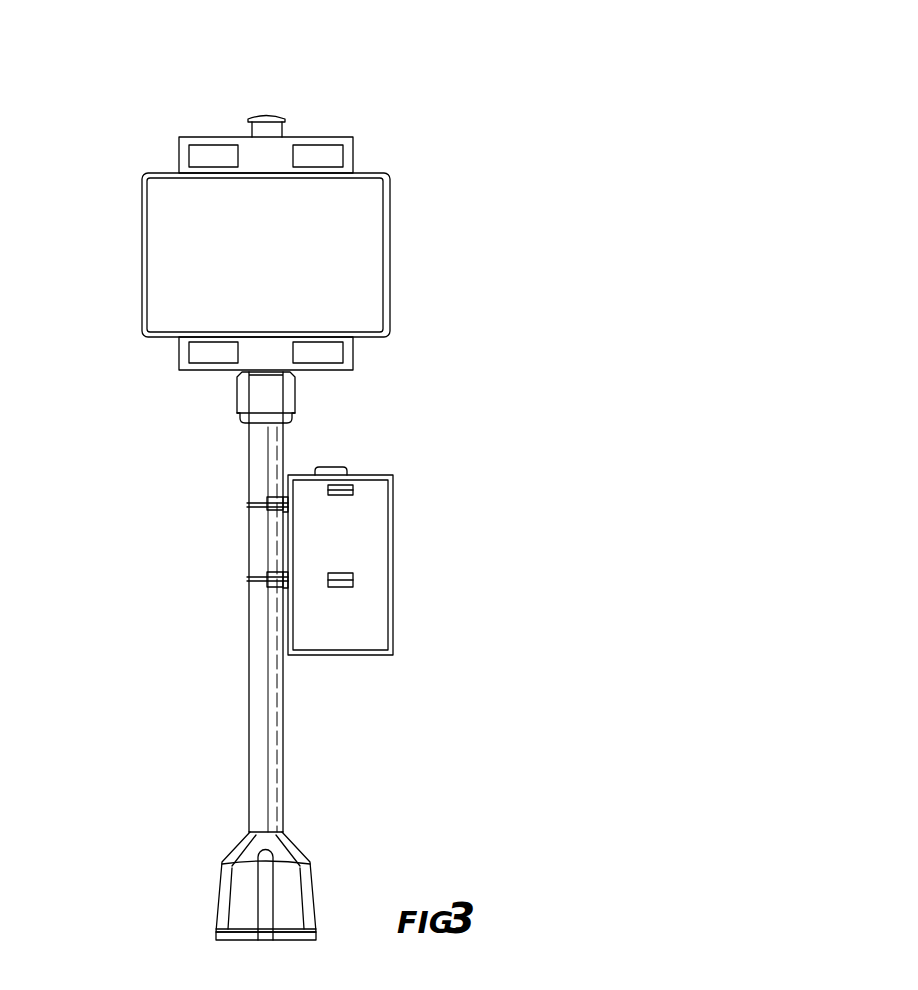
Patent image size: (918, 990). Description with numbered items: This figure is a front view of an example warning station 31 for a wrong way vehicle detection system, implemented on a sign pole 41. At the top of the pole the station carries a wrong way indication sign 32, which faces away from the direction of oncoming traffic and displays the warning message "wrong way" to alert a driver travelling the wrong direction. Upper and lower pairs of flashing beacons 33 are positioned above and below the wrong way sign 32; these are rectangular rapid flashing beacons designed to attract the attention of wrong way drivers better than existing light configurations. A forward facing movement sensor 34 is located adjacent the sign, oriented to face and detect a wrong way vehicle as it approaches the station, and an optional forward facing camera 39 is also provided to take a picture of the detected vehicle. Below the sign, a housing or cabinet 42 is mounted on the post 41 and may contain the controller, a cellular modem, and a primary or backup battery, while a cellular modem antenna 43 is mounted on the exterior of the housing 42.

The warning station 31 is at (528, 95).
The wrong way indication sign 32 is at (390, 277).
The flashing beacons 33 is at (128, 153).
The forward facing movement sensor 34 is at (295, 388).
The forward facing camera 39 is at (238, 451).
The sign pole 41 is at (283, 786).
The housing 42 is at (393, 562).
The cellular modem antenna 43 is at (348, 463).